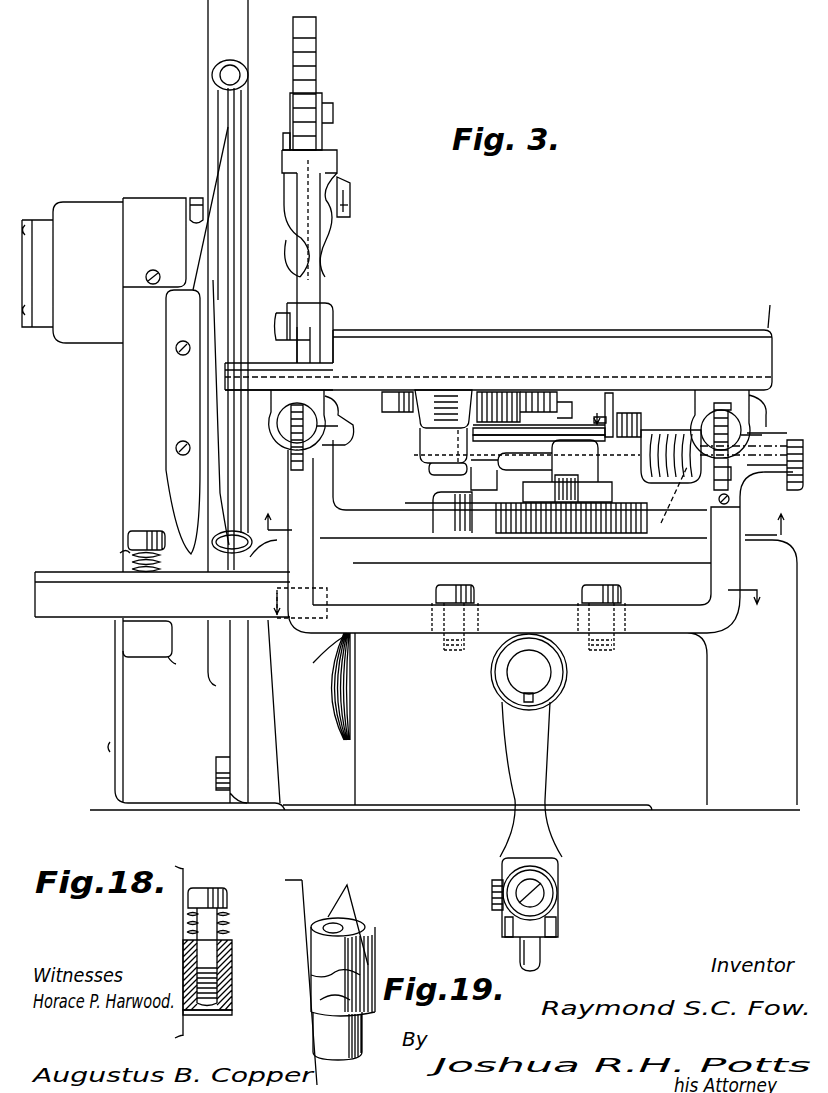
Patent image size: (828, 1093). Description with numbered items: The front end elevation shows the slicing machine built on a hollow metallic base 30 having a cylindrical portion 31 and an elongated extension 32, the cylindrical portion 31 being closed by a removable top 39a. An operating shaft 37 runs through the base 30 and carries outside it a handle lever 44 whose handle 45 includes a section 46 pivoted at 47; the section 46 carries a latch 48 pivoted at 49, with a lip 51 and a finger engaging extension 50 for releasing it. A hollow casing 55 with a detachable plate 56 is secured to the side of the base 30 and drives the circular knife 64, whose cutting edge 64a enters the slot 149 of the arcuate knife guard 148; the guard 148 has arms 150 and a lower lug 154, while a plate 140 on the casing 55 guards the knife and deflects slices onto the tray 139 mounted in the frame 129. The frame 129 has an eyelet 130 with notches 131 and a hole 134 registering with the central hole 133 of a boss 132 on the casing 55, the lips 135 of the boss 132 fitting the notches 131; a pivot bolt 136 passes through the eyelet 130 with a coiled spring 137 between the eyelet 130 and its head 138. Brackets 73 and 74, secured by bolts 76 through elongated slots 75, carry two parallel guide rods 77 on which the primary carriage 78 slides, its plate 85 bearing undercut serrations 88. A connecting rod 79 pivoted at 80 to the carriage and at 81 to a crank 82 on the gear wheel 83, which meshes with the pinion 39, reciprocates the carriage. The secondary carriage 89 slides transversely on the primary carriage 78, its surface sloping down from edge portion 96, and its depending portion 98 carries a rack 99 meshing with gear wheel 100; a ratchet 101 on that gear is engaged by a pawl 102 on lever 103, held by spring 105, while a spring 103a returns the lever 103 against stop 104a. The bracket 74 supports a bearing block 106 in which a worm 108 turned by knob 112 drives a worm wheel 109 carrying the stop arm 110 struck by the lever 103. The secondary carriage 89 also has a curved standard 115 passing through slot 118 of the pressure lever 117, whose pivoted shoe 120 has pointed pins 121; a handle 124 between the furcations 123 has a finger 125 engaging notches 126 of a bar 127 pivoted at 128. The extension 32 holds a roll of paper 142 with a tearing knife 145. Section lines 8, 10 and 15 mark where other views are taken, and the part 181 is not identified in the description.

In FIG. 3, the arcuate knife guard 148 is at (222, 21).
In FIG. 3, the arms of the knife guard 150 is at (212, 72).
In FIG. 3, the circular knife 64 is at (229, 107).
In FIG. 3, the slot of the knife guard 149 is at (222, 131).
In FIG. 3, the guide plate 181 is at (224, 498).
In FIG. 3, the plate 140 is at (212, 358).
In FIG. 3, the hollow casing 55 is at (124, 430).
In FIG. 18, the hollow casing 55 is at (187, 870).
In FIG. 19, the hollow casing 55 is at (303, 880).
In FIG. 3, the serrations 88 is at (226, 381).
In FIG. 3, the bar 127 is at (317, 24).
In FIG. 3, the notches of the bar 126 is at (307, 54).
In FIG. 3, the pressure lever 117 is at (323, 97).
In FIG. 3, the slot of the pressure lever 118 is at (334, 113).
In FIG. 3, the finger 125 is at (320, 152).
In FIG. 3, the furcations 123 is at (330, 160).
In FIG. 3, the pivoted shoe 120 is at (351, 195).
In FIG. 3, the pointed pins 121 is at (350, 210).
In FIG. 3, the handle 124 is at (330, 244).
In FIG. 3, the curved post or standard 115 is at (322, 274).
In FIG. 3, the pivot of the bar 128 is at (332, 322).
In FIG. 3, the plate of the primary carriage 85 is at (525, 380).
In FIG. 3, the edge portion of the secondary carriage surface 96 is at (760, 314).
In FIG. 3, the primary carriage 78 is at (357, 383).
In FIG. 3, the toothed rack 99 is at (393, 391).
In FIG. 3, the secondary carriage 89 is at (438, 390).
In FIG. 3, the ratchet wheel 101 is at (466, 395).
In FIG. 3, the pivotal connection of connecting rod to carriage 80 is at (430, 470).
In FIG. 3, the gear wheel 100 is at (480, 395).
In FIG. 3, the depending portion of the secondary carriage 98 is at (545, 392).
In FIG. 3, the pawl 102 is at (563, 412).
In FIG. 3, the stop 104a is at (609, 390).
In FIG. 3, the spring 103a is at (618, 415).
In FIG. 3, the stop arm 110 is at (628, 428).
In FIG. 3, the section line 10 is at (698, 467).
In FIG. 3, the section line 8 is at (521, 512).
In FIG. 3, the lever 103 is at (478, 438).
In FIG. 3, the spring 105 is at (611, 437).
In FIG. 3, the connecting rod 79 is at (509, 455).
In FIG. 3, the toothed pinion 39 is at (502, 484).
In FIG. 3, the pivotal connection of connecting rod to crank 81 is at (598, 470).
In FIG. 3, the crank 82 is at (600, 492).
In FIG. 3, the worm 108 is at (668, 484).
In FIG. 3, the worm wheel 109 is at (680, 500).
In FIG. 3, the gear wheel 83 is at (600, 530).
In FIG. 3, the bolts 76 is at (470, 510).
In FIG. 3, the bearing block 106 is at (721, 504).
In FIG. 3, the guide rods 77 is at (340, 437).
In FIG. 3, the knob 112 is at (782, 436).
In FIG. 3, the supporting bracket 73 is at (378, 517).
In FIG. 3, the supporting bracket 74 is at (385, 612).
In FIG. 3, the elongated slots 75 is at (580, 605).
In FIG. 3, the section line 15 is at (513, 604).
In FIG. 3, the lug 154 is at (262, 545).
In FIG. 3, the removable top 39a is at (391, 552).
In FIG. 3, the tray 139 is at (92, 578).
In FIG. 3, the frame 129 is at (224, 556).
In FIG. 3, the cutting edge of the knife 64a is at (235, 595).
In FIG. 3, the head of the pivot bolt 138 is at (140, 531).
In FIG. 18, the head of the pivot bolt 138 is at (228, 899).
In FIG. 3, the coiled spring 137 is at (132, 548).
In FIG. 18, the coiled spring 137 is at (229, 921).
In FIG. 3, the pivot bolt 136 is at (128, 553).
In FIG. 18, the pivot bolt 136 is at (208, 942).
In FIG. 3, the boss 132 is at (149, 642).
In FIG. 18, the boss 132 is at (220, 993).
In FIG. 19, the boss 132 is at (345, 1055).
In FIG. 3, the detachable plate 56 is at (115, 699).
In FIG. 3, the cylindrical portion of the base 31 is at (281, 712).
In FIG. 3, the cutting or tearing knife 145 is at (335, 637).
In FIG. 3, the roll of paper 142 is at (345, 683).
In FIG. 3, the hollow metallic base 30 is at (435, 717).
In FIG. 3, the elongated extension of the base 32 is at (610, 717).
In FIG. 3, the operating shaft 37 is at (529, 672).
In FIG. 3, the handle lever 44 is at (531, 779).
In FIG. 3, the handle 45 is at (526, 875).
In FIG. 3, the section of the handle 46 is at (560, 872).
In FIG. 3, the pivotal connection of handle section 47 is at (558, 892).
In FIG. 3, the lip of the latch 51 is at (492, 912).
In FIG. 3, the pivot of the latch 49 is at (505, 926).
In FIG. 3, the latch 48 is at (558, 925).
In FIG. 3, the finger engaging extension 50 is at (541, 952).
In FIG. 18, the eyelet 130 is at (233, 963).
In FIG. 19, the eyelet 130 is at (362, 906).
In FIG. 18, the notches of the eyelet 131 is at (190, 967).
In FIG. 19, the notches of the eyelet 131 is at (312, 975).
In FIG. 18, the hole of the eyelet 134 is at (190, 945).
In FIG. 19, the hole of the eyelet 134 is at (338, 918).
In FIG. 18, the lips 135 is at (190, 973).
In FIG. 19, the lips 135 is at (320, 1001).
In FIG. 18, the central hole of the boss 133 is at (232, 1015).
In FIG. 19, the central hole of the boss 133 is at (399, 1013).